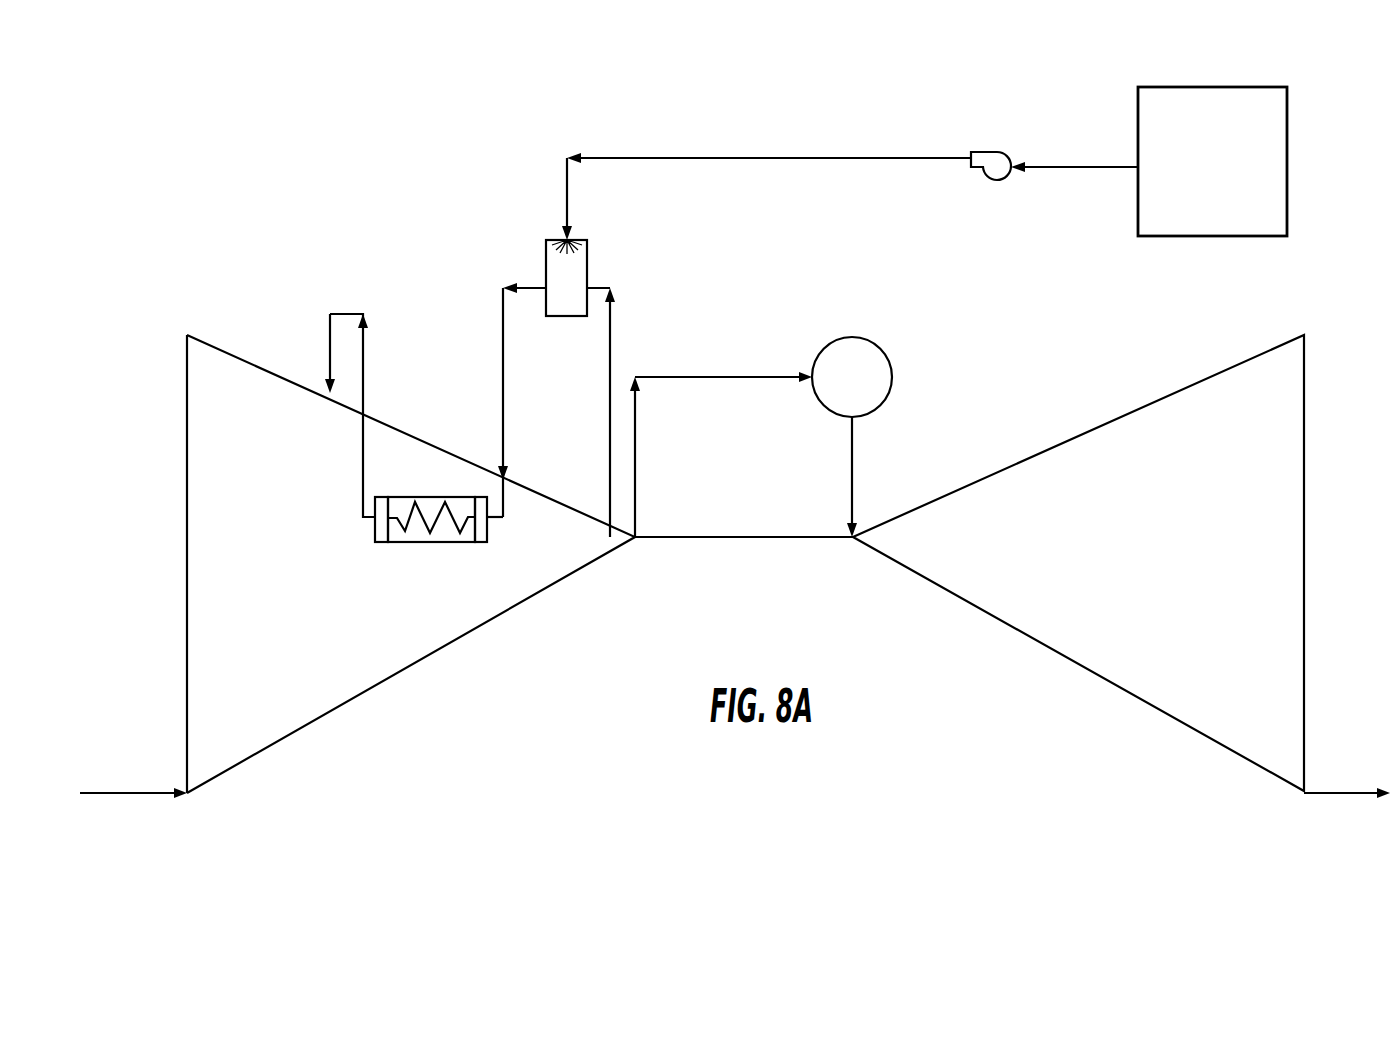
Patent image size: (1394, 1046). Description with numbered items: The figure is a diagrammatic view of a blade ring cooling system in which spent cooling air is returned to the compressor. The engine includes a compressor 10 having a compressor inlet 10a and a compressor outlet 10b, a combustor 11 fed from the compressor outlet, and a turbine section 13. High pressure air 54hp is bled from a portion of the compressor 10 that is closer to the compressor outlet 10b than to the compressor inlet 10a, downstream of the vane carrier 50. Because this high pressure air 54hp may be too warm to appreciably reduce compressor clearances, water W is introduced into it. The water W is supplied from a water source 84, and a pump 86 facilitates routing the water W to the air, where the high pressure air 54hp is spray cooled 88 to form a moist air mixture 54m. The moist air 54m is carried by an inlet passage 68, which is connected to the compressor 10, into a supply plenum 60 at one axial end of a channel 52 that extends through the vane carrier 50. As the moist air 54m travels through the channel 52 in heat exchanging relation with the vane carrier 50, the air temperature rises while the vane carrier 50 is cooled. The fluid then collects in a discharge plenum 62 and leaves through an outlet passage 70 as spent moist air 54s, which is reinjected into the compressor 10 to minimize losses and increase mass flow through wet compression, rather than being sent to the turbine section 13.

The compressor 10 is at (212, 748).
The compressor inlet 10a is at (187, 508).
The compressor outlet 10b is at (640, 540).
The combustor 11 is at (880, 350).
The turbine section 13 is at (1134, 681).
The vane carrier 50 is at (390, 530).
The channel 52 is at (442, 535).
The spent moist air 54s is at (330, 355).
The moist air mixture 54m is at (503, 420).
The high pressure air 54hp is at (610, 462).
The supply plenum 60 is at (493, 540).
The discharge plenum 62 is at (377, 523).
The inlet passage 68 is at (480, 312).
The outlet passage 70 is at (375, 380).
The water source 84 is at (1287, 118).
The pump 86 is at (982, 150).
The spray cooling 88 is at (525, 241).
The water W is at (566, 177).